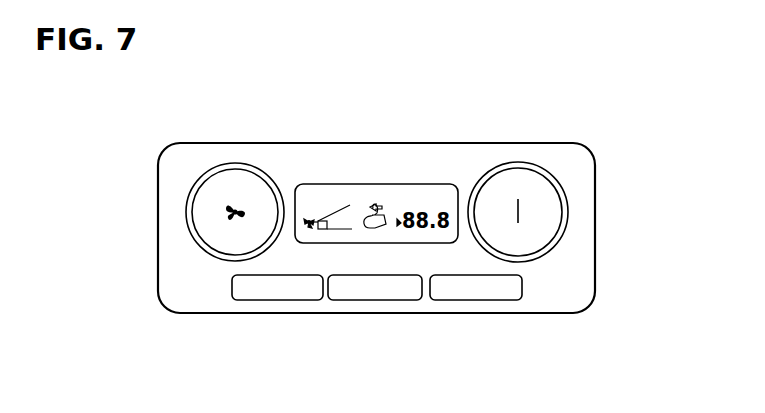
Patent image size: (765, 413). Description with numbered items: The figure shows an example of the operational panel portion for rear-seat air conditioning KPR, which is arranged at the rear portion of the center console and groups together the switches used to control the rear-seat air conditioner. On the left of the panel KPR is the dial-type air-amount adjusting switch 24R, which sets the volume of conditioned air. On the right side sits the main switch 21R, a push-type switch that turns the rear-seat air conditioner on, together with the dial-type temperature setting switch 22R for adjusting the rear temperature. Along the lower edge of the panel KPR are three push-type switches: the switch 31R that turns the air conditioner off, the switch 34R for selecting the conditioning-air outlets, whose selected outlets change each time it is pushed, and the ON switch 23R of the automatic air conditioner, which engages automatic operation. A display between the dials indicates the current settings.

The panel portion for rear-seat air conditioning KPR is at (437, 86).
The air-amount adjusting switch 24R is at (222, 185).
The main switch 21R is at (543, 207).
The temperature setting switch 22R is at (543, 222).
The switch to turn off the air conditioner 31R is at (246, 293).
The switch for selecting conditioning-air outlets 34R is at (377, 293).
The ON switch of the automatic air conditioner 23R is at (513, 293).